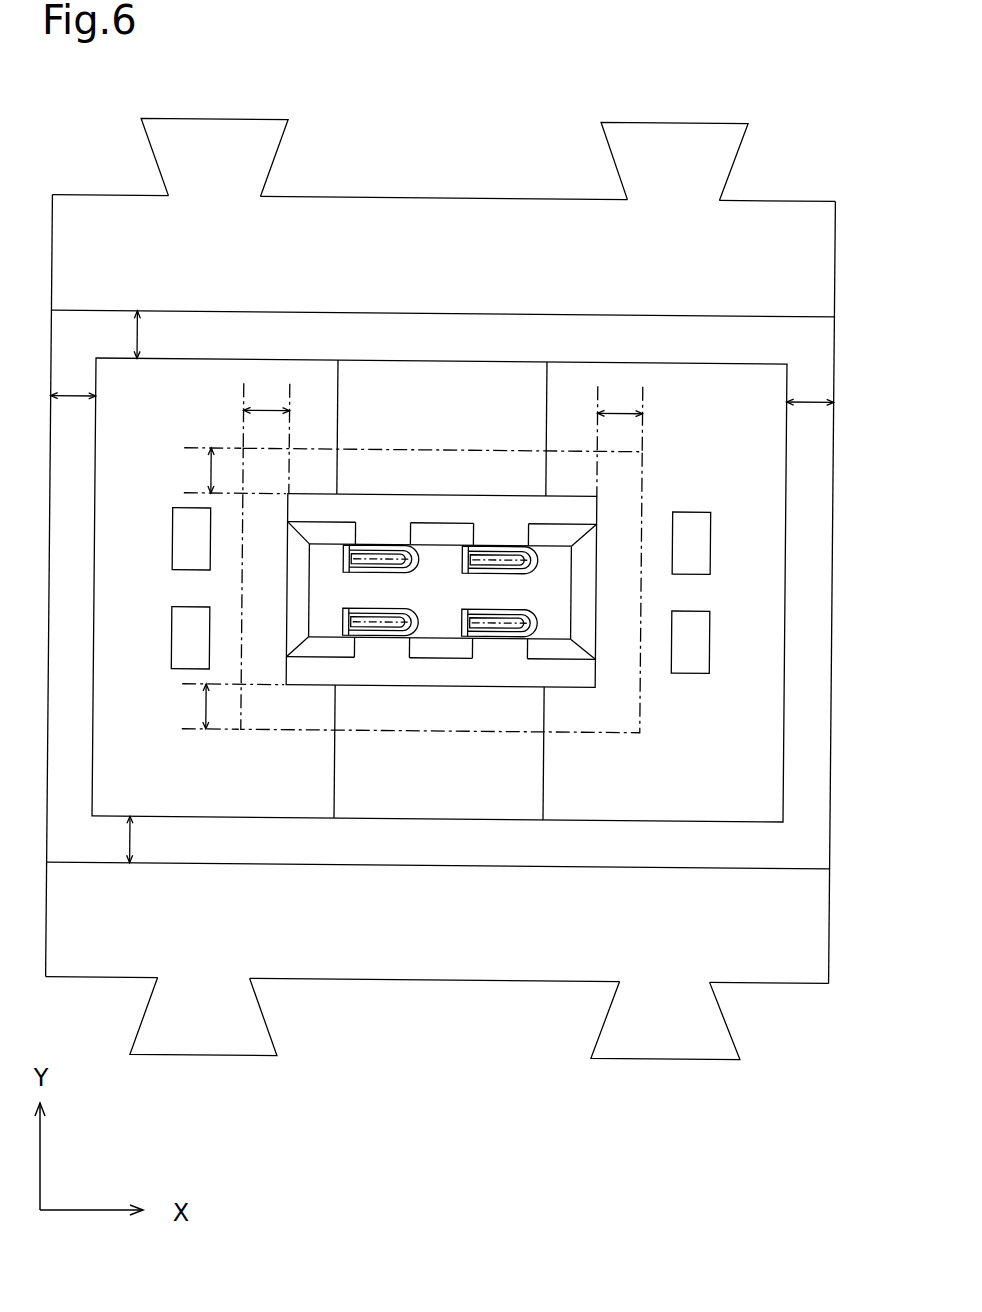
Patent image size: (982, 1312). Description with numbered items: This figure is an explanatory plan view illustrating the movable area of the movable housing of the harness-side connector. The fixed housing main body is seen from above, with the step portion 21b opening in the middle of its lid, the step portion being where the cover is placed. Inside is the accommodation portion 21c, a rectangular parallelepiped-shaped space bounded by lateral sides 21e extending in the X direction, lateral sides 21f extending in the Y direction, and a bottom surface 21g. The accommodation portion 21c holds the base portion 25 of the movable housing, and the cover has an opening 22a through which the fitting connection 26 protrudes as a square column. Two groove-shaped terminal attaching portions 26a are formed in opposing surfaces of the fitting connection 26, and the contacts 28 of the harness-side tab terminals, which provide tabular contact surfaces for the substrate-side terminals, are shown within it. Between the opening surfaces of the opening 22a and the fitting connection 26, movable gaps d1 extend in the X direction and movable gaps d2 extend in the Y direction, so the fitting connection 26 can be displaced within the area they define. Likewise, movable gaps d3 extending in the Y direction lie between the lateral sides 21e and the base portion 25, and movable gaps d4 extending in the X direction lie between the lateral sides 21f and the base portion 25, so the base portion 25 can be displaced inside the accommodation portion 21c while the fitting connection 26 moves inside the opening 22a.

The step portion 21b is at (438, 238).
The lateral sides of the accommodation portion extending in the Y direction 21f is at (49, 338).
The accommodation portion 21c is at (231, 329).
The bottom surface of the accommodation portion 21g is at (330, 334).
The lateral sides of the accommodation portion extending in the X direction 21e is at (595, 316).
The opening 22a is at (489, 451).
The base portion 25 is at (275, 821).
The fitting connection 26 is at (369, 495).
The terminal attaching portion 26a is at (508, 633).
The contact 28 is at (492, 548).
The movable gap d1 is at (443, 397).
The movable gap d2 is at (189, 588).
The movable gap d3 is at (153, 587).
The movable gap d4 is at (441, 421).